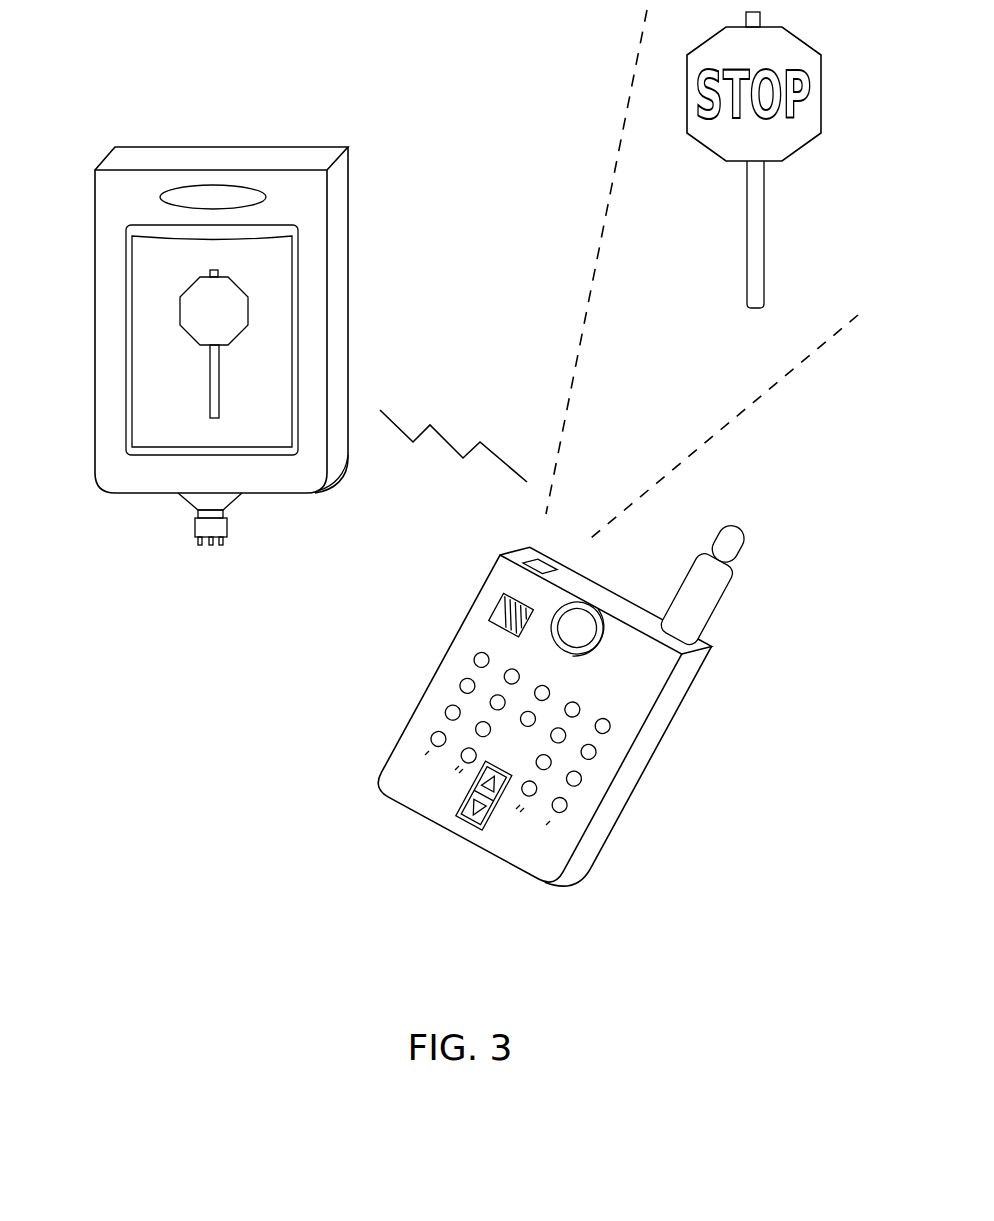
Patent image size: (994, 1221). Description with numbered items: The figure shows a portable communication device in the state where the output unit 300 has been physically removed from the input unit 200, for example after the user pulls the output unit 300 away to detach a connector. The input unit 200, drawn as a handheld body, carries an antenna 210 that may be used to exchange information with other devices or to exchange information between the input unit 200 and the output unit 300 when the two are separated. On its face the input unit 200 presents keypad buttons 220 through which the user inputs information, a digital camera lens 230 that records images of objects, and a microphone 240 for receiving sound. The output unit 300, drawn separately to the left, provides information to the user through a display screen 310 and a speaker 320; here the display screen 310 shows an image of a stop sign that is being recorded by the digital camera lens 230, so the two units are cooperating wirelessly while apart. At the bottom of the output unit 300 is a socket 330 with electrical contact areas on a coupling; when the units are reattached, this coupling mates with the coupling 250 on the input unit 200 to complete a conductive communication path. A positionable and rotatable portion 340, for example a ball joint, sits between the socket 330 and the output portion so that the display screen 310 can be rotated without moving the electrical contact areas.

The input unit 200 is at (553, 893).
The antenna 210 is at (728, 523).
The keypad buttons 220 is at (447, 709).
The digital camera lens 230 is at (527, 553).
The microphone 240 is at (495, 606).
The coupling 250 is at (588, 650).
The output unit 300 is at (290, 145).
The display screen 310 is at (128, 320).
The speaker 320 is at (205, 184).
The socket 330 is at (230, 527).
The positionable and rotatable portion 340 is at (192, 515).